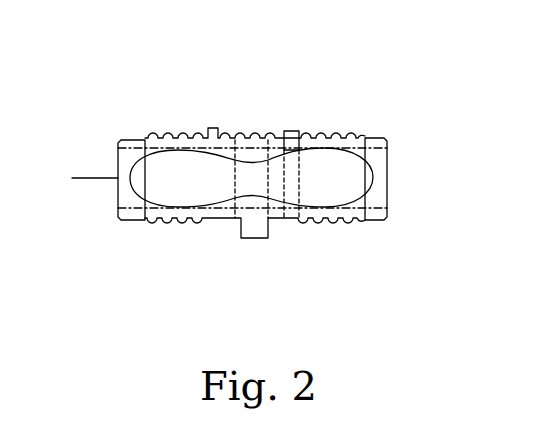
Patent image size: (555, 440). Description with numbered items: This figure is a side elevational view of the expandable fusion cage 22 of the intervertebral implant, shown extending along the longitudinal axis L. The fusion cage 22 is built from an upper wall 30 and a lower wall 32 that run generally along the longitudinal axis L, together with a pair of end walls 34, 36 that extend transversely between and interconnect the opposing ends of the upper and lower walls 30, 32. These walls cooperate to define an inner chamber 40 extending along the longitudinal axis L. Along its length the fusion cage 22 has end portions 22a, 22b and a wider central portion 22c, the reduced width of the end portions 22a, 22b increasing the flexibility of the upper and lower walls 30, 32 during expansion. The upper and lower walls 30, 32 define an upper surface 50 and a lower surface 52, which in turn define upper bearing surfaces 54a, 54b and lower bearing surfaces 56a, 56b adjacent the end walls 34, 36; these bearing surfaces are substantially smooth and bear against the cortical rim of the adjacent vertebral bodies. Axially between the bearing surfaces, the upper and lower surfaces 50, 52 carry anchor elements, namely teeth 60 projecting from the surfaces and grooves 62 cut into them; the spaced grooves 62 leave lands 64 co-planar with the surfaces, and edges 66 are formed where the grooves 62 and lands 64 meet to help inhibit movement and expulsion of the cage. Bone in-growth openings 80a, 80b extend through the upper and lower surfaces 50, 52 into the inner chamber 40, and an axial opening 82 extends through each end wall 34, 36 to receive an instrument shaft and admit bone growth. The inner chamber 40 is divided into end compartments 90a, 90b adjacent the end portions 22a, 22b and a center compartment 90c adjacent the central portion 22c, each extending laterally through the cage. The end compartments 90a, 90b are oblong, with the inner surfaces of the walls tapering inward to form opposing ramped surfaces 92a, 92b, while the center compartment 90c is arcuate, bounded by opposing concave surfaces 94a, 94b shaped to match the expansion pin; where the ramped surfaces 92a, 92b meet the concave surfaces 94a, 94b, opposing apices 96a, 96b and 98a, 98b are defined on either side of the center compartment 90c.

The fusion cage 22 is at (147, 106).
The end portion 22a is at (147, 235).
The end portion 22b is at (364, 228).
The central portion 22c is at (269, 119).
The upper wall 30 is at (298, 136).
The lower wall 32 is at (212, 231).
The end wall 34 is at (117, 212).
The end wall 36 is at (398, 190).
The inner chamber 40 is at (251, 179).
The upper surface 50 is at (234, 123).
The lower surface 52 is at (271, 241).
The upper bearing surface 54a is at (124, 139).
The upper bearing surface 54b is at (376, 140).
The lower bearing surface 56a is at (123, 221).
The lower bearing surface 56b is at (383, 221).
The teeth 60 is at (278, 137).
The grooves 62 is at (185, 128).
The lands 64 is at (220, 125).
The edges 66 is at (197, 126).
The bone in-growth opening 80a is at (118, 146).
The bone in-growth opening 80b is at (392, 158).
The axial opening 82 is at (388, 148).
The end compartment 90a is at (159, 135).
The end compartment 90b is at (344, 145).
The center compartment 90c is at (291, 133).
The ramped surface 92a is at (259, 121).
The ramped surface 92b is at (184, 214).
The concave surface 94a is at (289, 136).
The concave surface 94b is at (288, 221).
The apex 96a is at (217, 170).
The apex 96b is at (217, 193).
The apex 98a is at (288, 171).
The apex 98b is at (288, 193).
The longitudinal axis L is at (83, 158).